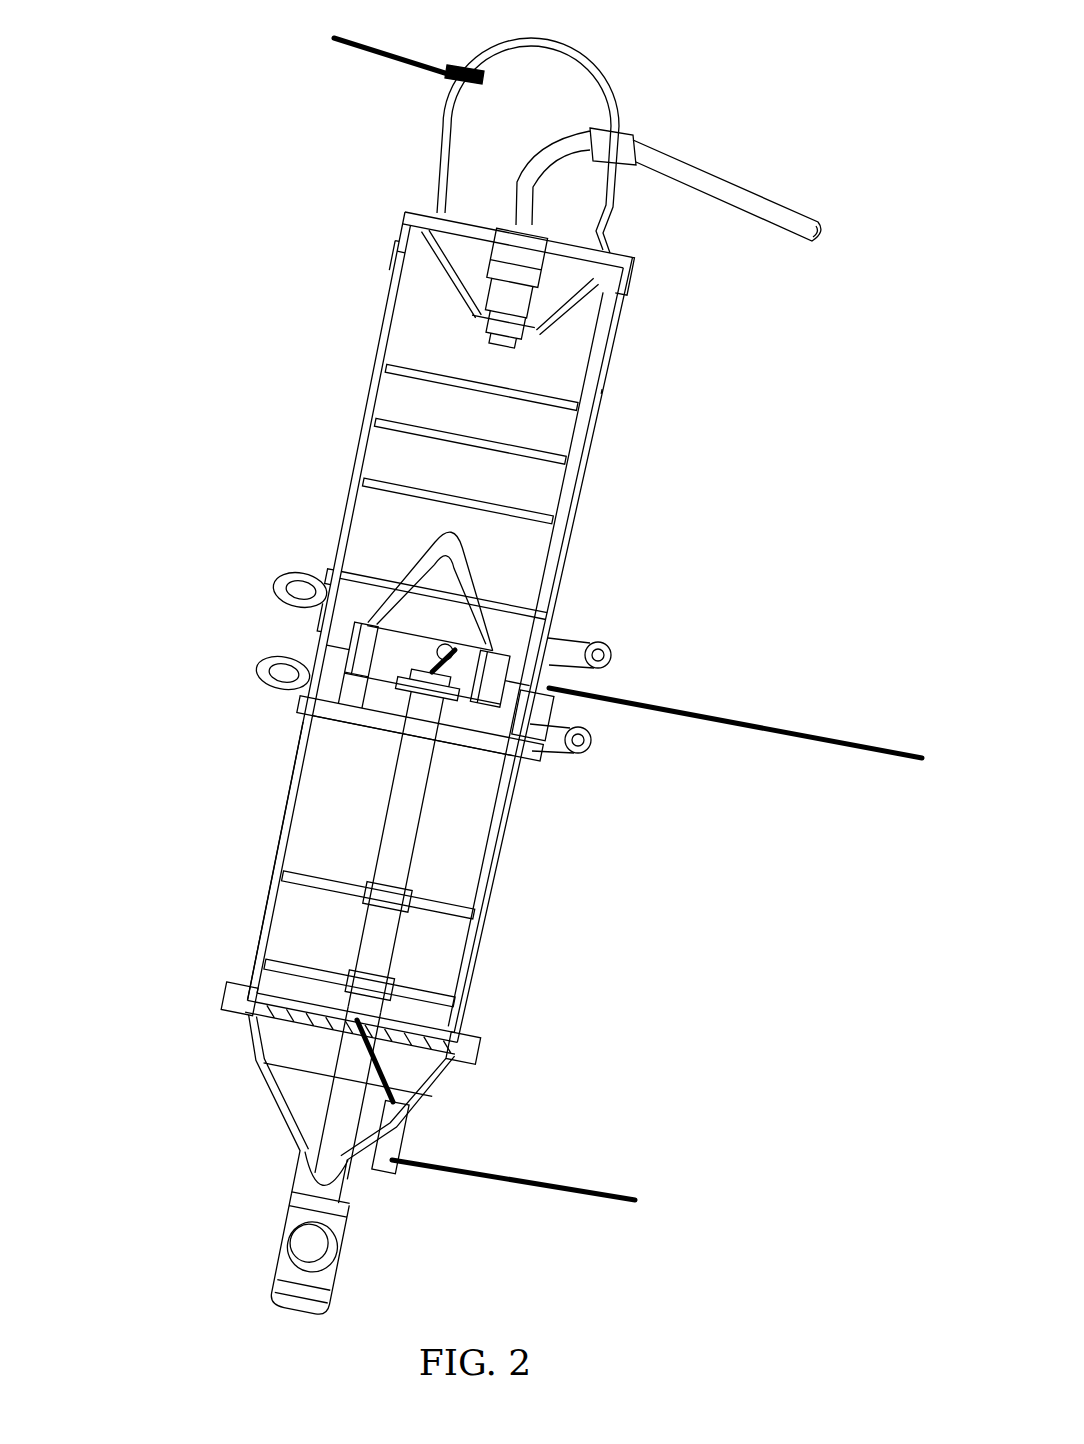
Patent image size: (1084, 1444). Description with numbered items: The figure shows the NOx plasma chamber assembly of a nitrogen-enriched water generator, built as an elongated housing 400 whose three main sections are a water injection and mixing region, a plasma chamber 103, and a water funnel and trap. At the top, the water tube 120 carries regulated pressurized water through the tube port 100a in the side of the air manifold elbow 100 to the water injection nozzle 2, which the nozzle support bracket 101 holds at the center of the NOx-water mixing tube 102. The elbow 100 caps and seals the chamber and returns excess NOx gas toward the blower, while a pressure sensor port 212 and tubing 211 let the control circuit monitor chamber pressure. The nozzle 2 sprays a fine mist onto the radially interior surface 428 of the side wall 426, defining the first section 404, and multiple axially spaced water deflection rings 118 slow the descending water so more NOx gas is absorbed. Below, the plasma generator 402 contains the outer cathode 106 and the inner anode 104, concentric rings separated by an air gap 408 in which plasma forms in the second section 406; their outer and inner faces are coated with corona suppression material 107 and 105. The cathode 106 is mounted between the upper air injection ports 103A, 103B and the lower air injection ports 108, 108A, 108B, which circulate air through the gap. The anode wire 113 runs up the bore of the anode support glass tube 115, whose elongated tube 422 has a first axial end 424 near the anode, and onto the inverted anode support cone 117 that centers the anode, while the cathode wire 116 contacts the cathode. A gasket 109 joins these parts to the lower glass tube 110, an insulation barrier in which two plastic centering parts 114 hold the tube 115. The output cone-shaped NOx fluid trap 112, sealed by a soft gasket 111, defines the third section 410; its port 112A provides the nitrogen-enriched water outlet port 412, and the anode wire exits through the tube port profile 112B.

The water injection nozzle 2 is at (600, 350).
The air manifold elbow 100 is at (440, 165).
The tube port 100a is at (622, 133).
The nozzle support bracket 101 is at (413, 228).
The NOx-water mixing tube 102 is at (386, 298).
The plasma chamber 103 is at (340, 566).
The upper air injection port 103A is at (291, 577).
The upper air injection port 103B is at (612, 657).
The anode 104 is at (318, 612).
The corona suppression material 105 is at (322, 638).
The cathode 106 is at (325, 658).
The corona suppression material 107 is at (358, 672).
The lower air injection port 108 is at (300, 708).
The lower air injection port 108A is at (257, 670).
The lower air injection port 108B is at (583, 752).
The gasket 109 is at (353, 725).
The lower glass tube 110 is at (265, 890).
The soft gasket 111 is at (250, 980).
The output cone-shaped NOx fluid trap 112 is at (266, 1100).
The port 112A is at (289, 1228).
The tube port profile 112B is at (395, 1125).
The anode wire 113 is at (460, 650).
The centering parts 114 is at (400, 1010).
The anode support glass tube 115 is at (408, 818).
The cathode wire 116 is at (822, 737).
The anode support cone 117 is at (480, 578).
The water deflection rings 118 is at (543, 513).
The water tube 120 is at (716, 170).
The tubing 211 is at (333, 46).
The pressure sensor port 212 is at (468, 66).
The elongated housing 400 is at (388, 342).
The plasma generator 402 is at (300, 560).
The first section 404 is at (575, 320).
The second section 406 is at (462, 717).
The air gap 408 is at (518, 676).
The third section 410 is at (302, 925).
The nitrogen-enriched water outlet port 412 is at (314, 1248).
The elongated tube 422 is at (385, 842).
The first axial end 424 is at (414, 696).
The side wall 426 is at (392, 315).
The radially interior surface 428 is at (410, 268).